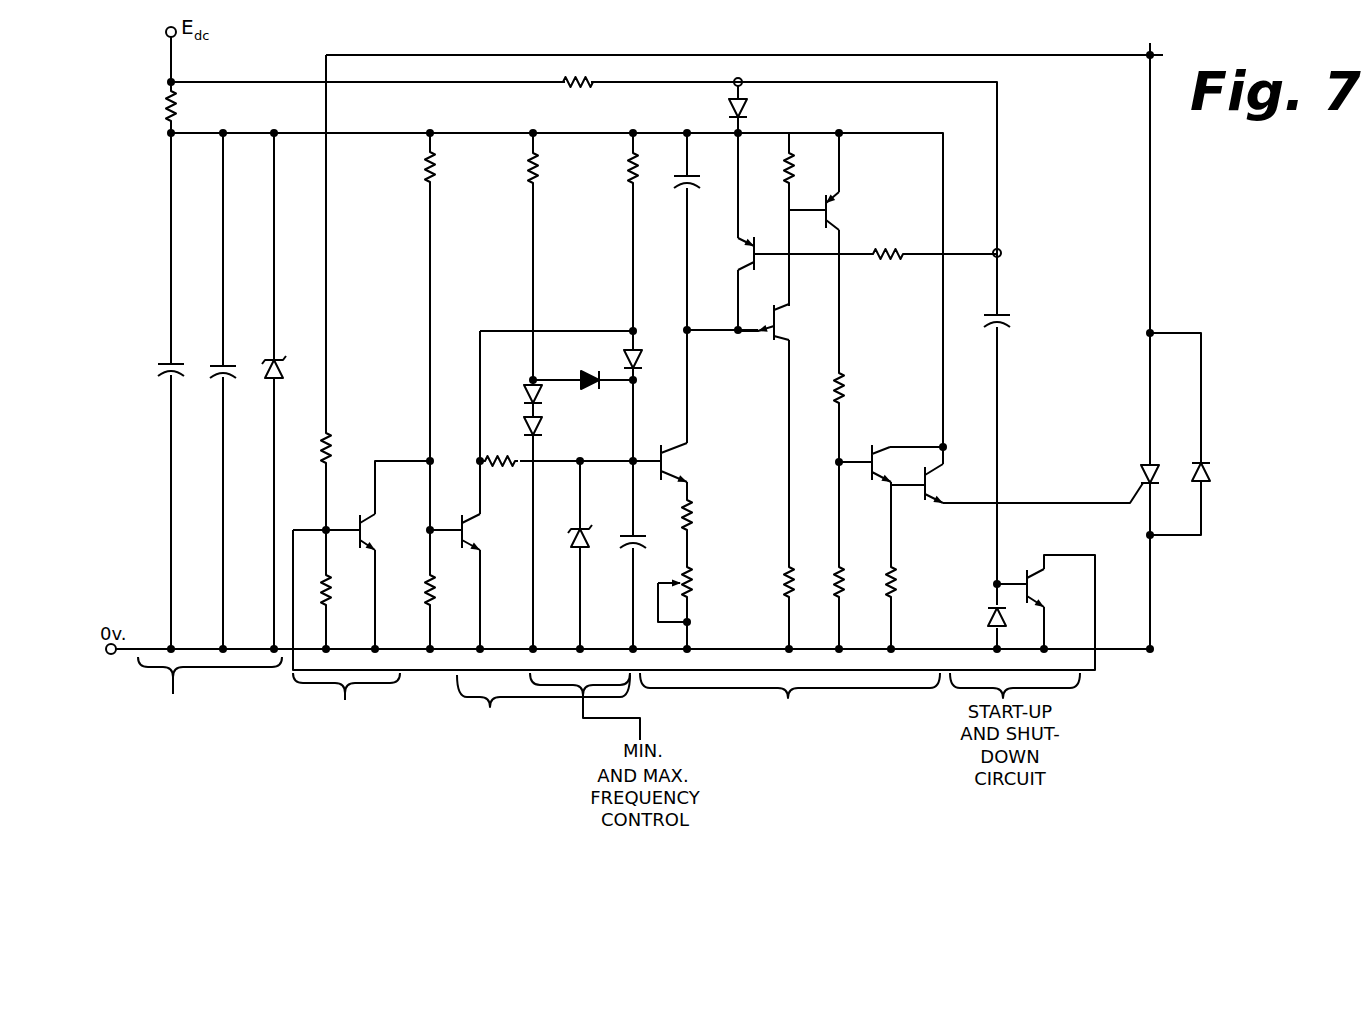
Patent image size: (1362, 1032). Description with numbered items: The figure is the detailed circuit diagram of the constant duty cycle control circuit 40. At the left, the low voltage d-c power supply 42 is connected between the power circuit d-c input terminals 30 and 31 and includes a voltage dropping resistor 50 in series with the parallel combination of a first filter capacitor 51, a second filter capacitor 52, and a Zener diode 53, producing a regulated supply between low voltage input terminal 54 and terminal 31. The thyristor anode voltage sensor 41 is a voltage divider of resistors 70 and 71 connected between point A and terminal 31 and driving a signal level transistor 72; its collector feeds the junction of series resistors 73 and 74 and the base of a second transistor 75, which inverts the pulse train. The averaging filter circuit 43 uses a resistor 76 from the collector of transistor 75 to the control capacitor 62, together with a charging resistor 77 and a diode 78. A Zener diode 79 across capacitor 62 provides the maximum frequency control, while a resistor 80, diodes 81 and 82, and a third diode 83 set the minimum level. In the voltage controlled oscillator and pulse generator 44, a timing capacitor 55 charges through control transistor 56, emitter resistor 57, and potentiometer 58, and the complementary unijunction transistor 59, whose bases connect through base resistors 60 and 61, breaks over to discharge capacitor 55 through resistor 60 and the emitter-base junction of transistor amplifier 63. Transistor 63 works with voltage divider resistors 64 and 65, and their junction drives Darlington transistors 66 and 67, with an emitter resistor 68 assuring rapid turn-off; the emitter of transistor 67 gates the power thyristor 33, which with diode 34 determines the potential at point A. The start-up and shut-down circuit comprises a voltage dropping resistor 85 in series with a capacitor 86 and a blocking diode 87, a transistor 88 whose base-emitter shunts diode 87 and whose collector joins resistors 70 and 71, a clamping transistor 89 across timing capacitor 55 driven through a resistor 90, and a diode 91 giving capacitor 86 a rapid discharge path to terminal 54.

The power circuit d-c input terminal 30 is at (166, 36).
The negative d-c terminal 31 is at (108, 656).
The power thyristor 33 is at (1140, 480).
The diode 34 is at (1205, 474).
The constant duty cycle control circuit 40 is at (292, 66).
The thyristor anode voltage sensor 41 is at (346, 752).
The low voltage d-c power supply 42 is at (199, 722).
The averaging filter circuit 43 is at (536, 736).
The voltage controlled oscillator and pulse generator 44 is at (790, 754).
The voltage dropping resistor 50 is at (168, 106).
The first filter capacitor 51 is at (166, 368).
The second filter capacitor 52 is at (220, 368).
The Zener diode 53 is at (270, 366).
The low voltage input terminal 54 is at (352, 133).
The timing capacitor 55 is at (684, 192).
The control transistor 56 is at (666, 464).
The emitter resistor 57 is at (690, 516).
The potentiometer 58 is at (690, 580).
The complementary unijunction transistor 59 is at (778, 322).
The base resistor 60 is at (792, 168).
The base resistor 61 is at (786, 586).
The control capacitor 62 is at (630, 548).
The transistor amplifier 63 is at (830, 209).
The voltage divider resistor 64 is at (842, 388).
The voltage divider resistor 65 is at (837, 586).
The transistor 66 is at (872, 455).
The transistor 67 is at (929, 483).
The emitter resistor 68 is at (889, 586).
The resistor 70 is at (322, 450).
The resistor 71 is at (327, 590).
The signal level transistor 72 is at (363, 530).
The series resistor 73 is at (427, 170).
The series resistor 74 is at (427, 590).
The second transistor 75 is at (465, 530).
The resistor 76 is at (500, 466).
The resistor 77 is at (630, 170).
The diode 78 is at (628, 360).
The Zener diode 79 is at (575, 542).
The resistor 80 is at (530, 170).
The first diode 81 is at (530, 395).
The diode 82 is at (530, 427).
The third diode 83 is at (591, 391).
The voltage dropping resistor 85 is at (585, 86).
The capacitor 86 is at (1000, 328).
The blocking diode 87 is at (992, 610).
The transistor 88 is at (1030, 587).
The clamping transistor 89 is at (752, 254).
The resistor 90 is at (890, 252).
The diode 91 is at (748, 108).
The point A is at (1155, 52).